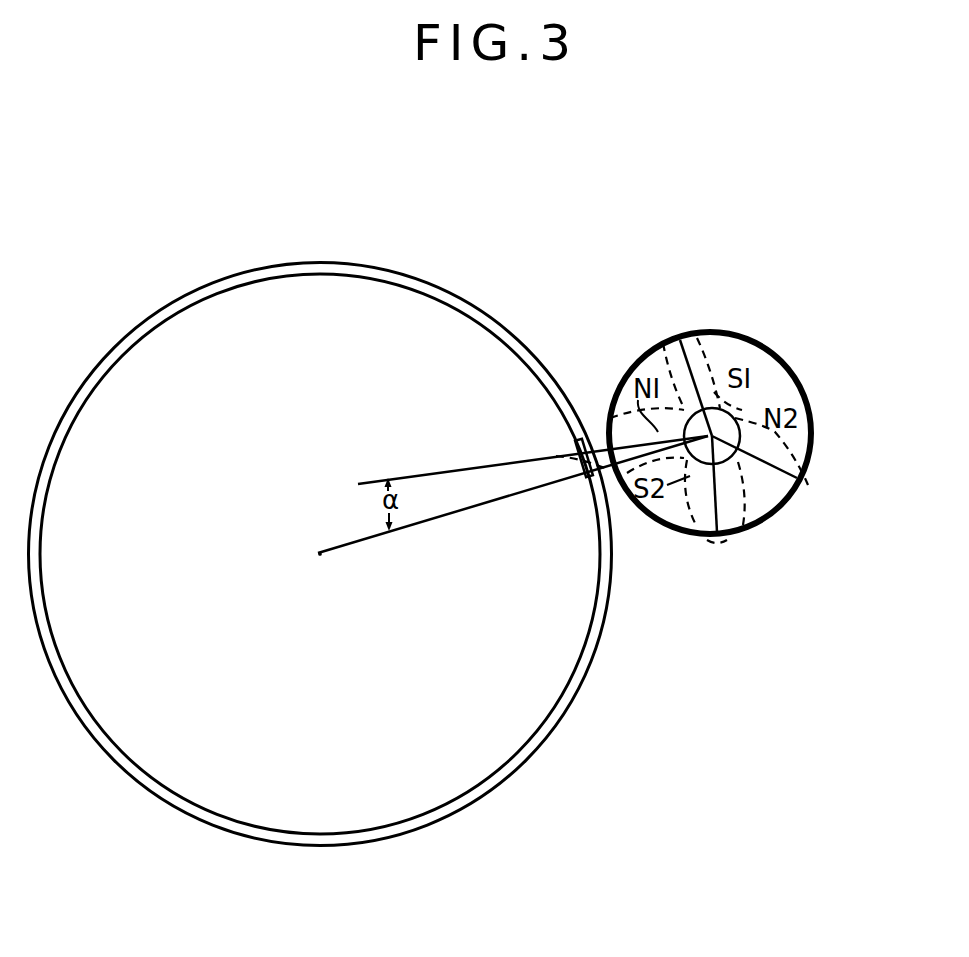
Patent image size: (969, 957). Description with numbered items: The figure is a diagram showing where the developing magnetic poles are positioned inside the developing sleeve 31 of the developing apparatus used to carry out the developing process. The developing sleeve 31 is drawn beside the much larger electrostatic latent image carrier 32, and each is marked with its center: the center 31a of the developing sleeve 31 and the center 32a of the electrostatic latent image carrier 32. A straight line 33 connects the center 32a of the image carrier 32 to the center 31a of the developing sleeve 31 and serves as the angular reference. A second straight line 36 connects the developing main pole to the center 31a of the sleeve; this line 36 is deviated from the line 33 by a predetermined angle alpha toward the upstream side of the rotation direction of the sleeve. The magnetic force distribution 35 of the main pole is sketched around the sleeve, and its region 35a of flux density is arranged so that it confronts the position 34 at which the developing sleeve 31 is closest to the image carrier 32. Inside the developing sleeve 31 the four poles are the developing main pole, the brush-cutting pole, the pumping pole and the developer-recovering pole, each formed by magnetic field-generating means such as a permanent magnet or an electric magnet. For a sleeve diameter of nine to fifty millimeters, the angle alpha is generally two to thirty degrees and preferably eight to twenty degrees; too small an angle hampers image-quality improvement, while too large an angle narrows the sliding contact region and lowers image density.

The developing sleeve 31 is at (727, 326).
The center of the developing sleeve 31a is at (712, 436).
The electrostatic latent image carrier 32 is at (336, 258).
The center of the electrostatic latent image carrier 32a is at (320, 562).
The straight line connecting the center of the image carrier to the center of the de 33 is at (438, 520).
The position closest to the image carrier 34 is at (583, 481).
The magnetic force distribution of the main pole 35 is at (620, 402).
The region of the magnetic force distribution 35a is at (556, 456).
The straight line connecting the main pole to the center of the developing sleeve 36 is at (438, 472).